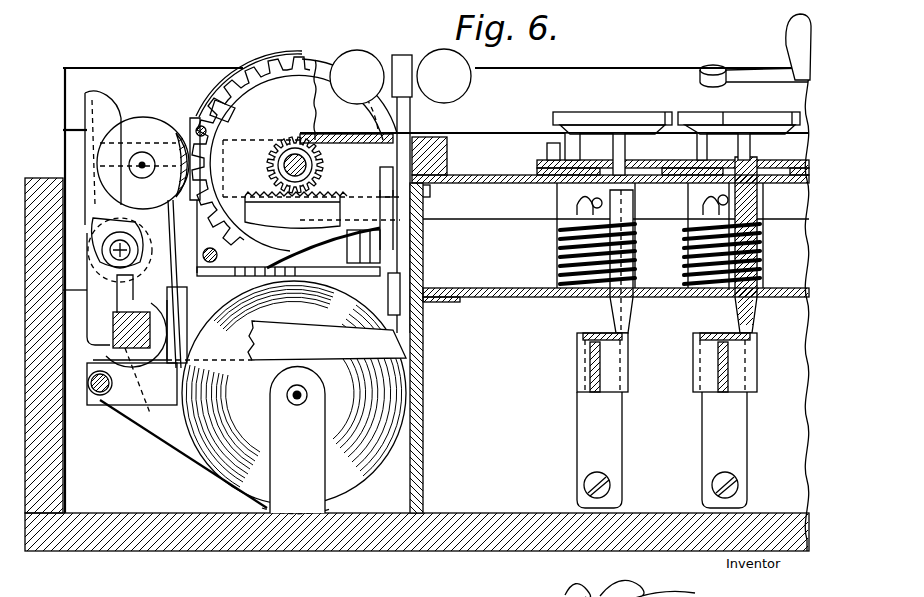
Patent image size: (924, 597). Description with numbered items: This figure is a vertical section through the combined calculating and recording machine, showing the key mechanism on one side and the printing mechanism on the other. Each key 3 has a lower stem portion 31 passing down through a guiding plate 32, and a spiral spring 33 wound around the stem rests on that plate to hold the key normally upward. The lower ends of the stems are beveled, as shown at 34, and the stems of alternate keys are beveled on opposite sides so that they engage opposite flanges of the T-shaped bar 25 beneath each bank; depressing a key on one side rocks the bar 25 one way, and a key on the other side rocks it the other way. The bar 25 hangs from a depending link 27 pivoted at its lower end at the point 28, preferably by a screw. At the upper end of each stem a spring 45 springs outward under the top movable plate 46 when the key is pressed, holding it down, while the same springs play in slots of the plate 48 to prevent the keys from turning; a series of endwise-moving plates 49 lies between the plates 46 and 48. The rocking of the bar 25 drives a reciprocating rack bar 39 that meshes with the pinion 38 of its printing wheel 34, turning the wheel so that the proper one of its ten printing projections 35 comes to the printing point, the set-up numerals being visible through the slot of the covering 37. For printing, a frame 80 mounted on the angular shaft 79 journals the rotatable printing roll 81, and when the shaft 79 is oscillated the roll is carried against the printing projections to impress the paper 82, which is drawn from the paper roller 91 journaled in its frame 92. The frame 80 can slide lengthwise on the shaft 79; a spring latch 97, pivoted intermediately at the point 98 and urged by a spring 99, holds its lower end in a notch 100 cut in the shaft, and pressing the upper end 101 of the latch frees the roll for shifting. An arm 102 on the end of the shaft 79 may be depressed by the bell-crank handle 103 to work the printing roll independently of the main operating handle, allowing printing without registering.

The key 3 is at (601, 114).
The bar 25 is at (620, 372).
The depending link 27 is at (617, 425).
The pivot point 28 is at (612, 482).
The lower stem portion 31 is at (560, 207).
The guiding plate 32 is at (495, 284).
The spiral spring 33 is at (558, 250).
The printing wheel 34 is at (272, 124).
The printing projection 35 is at (221, 104).
The covering 37 is at (263, 64).
The pinion 38 is at (268, 165).
The reciprocating rack bar 39 is at (270, 226).
The spring 45 is at (565, 137).
The top movable plate 46 is at (556, 158).
The plate 48 is at (497, 167).
The endwise-moving plate 49 is at (757, 160).
The angular shaft 79 is at (150, 323).
The frame 80 is at (160, 273).
The printing roll 81 is at (195, 125).
The paper 82 is at (165, 447).
The paper roller 91 is at (294, 397).
The frame 92 is at (297, 440).
The spring latch 97 is at (118, 222).
The pivot point 98 is at (125, 247).
The spring 99 is at (95, 148).
The notch 100 is at (140, 395).
The upper end of latch 101 is at (86, 103).
The arm 102 is at (286, 340).
The bell-crank handle 103 is at (410, 126).